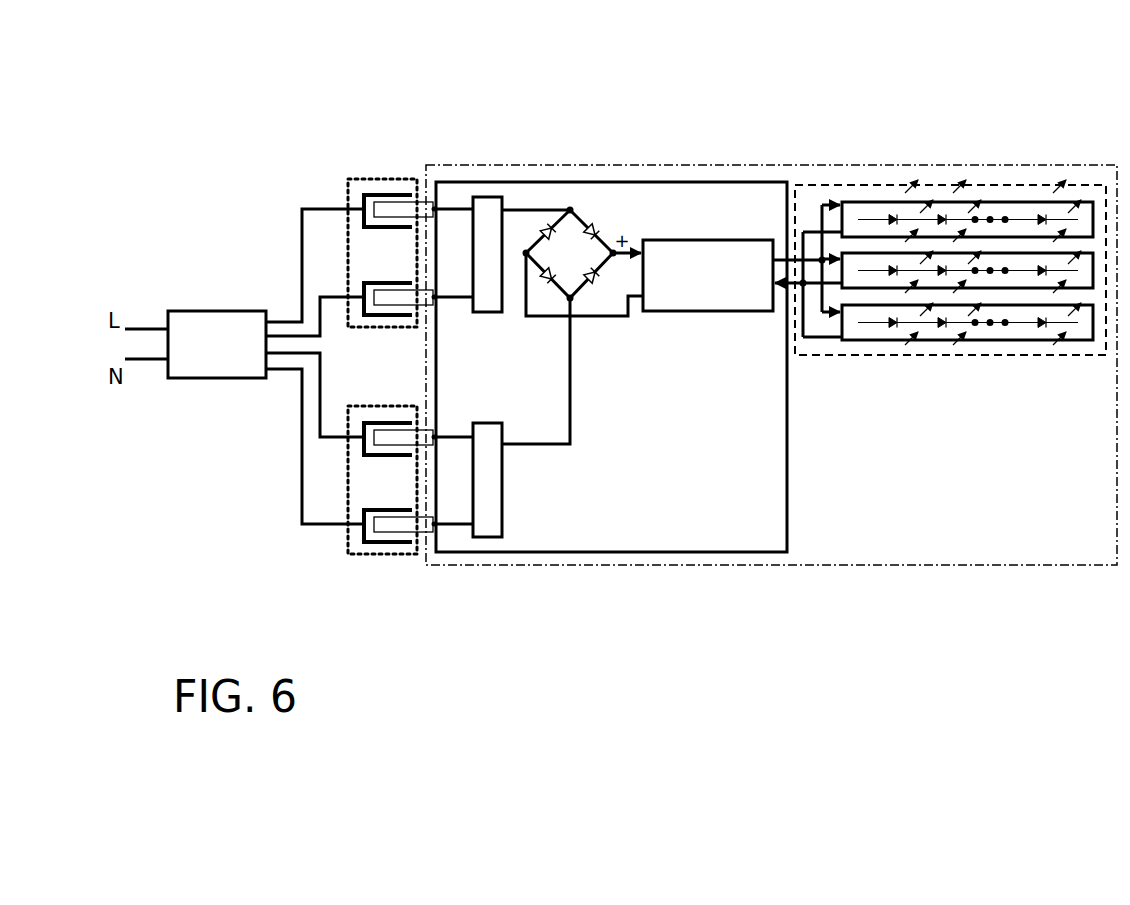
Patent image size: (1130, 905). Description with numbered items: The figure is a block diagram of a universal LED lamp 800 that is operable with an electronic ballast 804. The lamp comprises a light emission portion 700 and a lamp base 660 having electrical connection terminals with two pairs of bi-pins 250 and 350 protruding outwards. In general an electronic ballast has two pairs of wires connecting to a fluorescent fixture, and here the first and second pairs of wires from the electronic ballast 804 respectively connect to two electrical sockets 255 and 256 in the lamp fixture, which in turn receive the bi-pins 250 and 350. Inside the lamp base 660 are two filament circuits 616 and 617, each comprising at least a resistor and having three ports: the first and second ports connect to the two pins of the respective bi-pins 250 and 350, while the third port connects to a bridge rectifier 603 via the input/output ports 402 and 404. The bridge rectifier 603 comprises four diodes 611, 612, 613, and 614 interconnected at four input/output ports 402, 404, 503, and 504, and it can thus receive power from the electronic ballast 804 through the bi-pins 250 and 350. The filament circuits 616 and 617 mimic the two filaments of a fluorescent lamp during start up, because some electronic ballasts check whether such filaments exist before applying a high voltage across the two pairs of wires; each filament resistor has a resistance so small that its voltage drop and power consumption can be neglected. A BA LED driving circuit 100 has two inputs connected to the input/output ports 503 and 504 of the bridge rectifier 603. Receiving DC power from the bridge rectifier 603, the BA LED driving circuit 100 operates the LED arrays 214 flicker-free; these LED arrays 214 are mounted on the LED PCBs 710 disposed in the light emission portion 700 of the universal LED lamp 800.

The BA LED driving circuit 100 is at (742, 312).
The LED arrays 214 is at (873, 225).
The bi-pins 250 is at (433, 187).
The electrical socket 255 is at (372, 178).
The electrical socket 256 is at (372, 557).
The bi-pins 350 is at (427, 557).
The input/output port 402 is at (570, 206).
The input/output port 404 is at (572, 302).
The input/output port 503 is at (617, 259).
The input/output port 504 is at (526, 258).
The bridge rectifier 603 is at (597, 302).
The diode 611 is at (598, 226).
The diode 612 is at (597, 282).
The diode 613 is at (547, 283).
The diode 614 is at (543, 224).
The filament circuit 616 is at (493, 197).
The filament circuit 617 is at (503, 518).
The lamp base 660 is at (712, 180).
The light emission portion 700 is at (939, 265).
The LED PCBs 710 is at (1030, 232).
The universal LED lamp 800 is at (763, 567).
The electronic ballast 804 is at (215, 310).